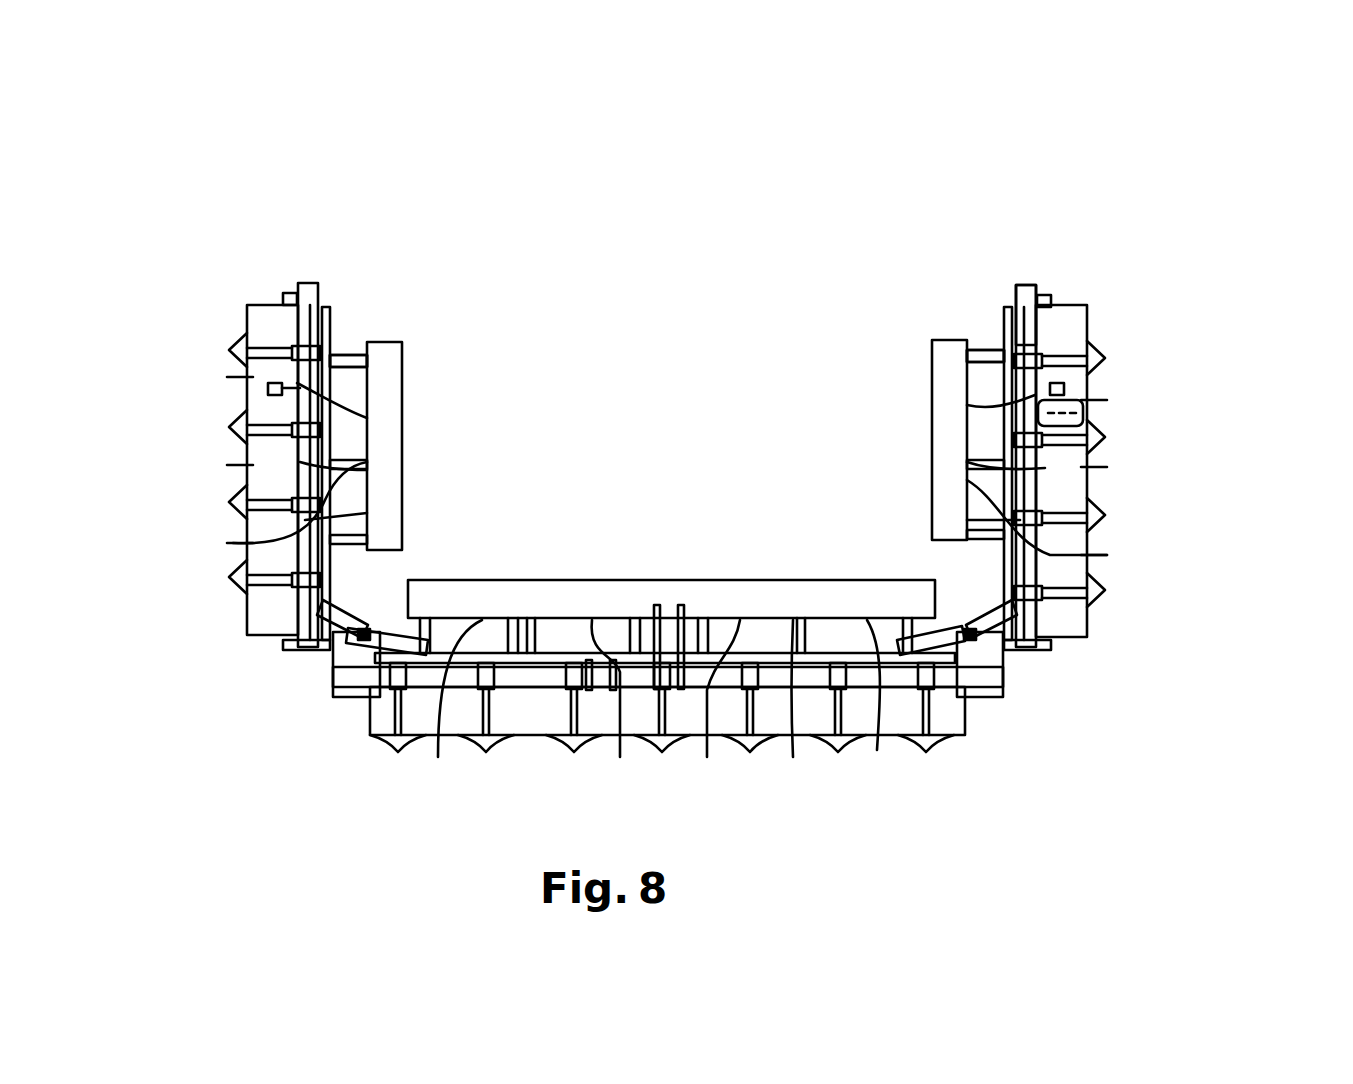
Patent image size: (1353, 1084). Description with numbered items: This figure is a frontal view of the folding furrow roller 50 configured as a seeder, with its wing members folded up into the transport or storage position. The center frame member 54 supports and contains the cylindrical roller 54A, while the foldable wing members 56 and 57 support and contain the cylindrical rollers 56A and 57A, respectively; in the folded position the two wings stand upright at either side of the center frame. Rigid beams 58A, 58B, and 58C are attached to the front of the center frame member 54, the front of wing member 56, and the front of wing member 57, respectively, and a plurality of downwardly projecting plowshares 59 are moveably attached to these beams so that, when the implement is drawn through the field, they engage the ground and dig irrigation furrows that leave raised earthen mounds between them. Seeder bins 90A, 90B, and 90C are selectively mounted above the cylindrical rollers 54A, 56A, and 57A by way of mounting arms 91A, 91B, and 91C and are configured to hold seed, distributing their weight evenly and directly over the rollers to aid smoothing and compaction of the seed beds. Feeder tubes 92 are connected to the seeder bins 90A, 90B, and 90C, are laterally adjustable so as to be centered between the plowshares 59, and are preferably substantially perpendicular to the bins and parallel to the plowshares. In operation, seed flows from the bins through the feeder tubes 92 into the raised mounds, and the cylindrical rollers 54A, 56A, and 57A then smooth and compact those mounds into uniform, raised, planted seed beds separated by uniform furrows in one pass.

The folding furrow roller 50 is at (684, 208).
The frame member 54 is at (350, 707).
The cylindrical roller 54A is at (962, 733).
The foldable wing member 56 is at (246, 290).
The cylindrical roller 56A is at (263, 322).
The foldable wing member 57 is at (1110, 318).
The cylindrical roller 57A is at (1088, 640).
The rigid beam 58A is at (303, 593).
The rigid beam 58B is at (1003, 678).
The rigid beam 58C is at (1027, 315).
The plowshare 59 is at (400, 743).
The seeder bin 90A is at (388, 352).
The seeder bin 90B is at (460, 593).
The seeder bin 90C is at (938, 352).
The mounting arm 91A is at (347, 352).
The mounting arm 91B is at (380, 622).
The mounting arm 91C is at (978, 340).
The feeder tube 92 is at (615, 742).